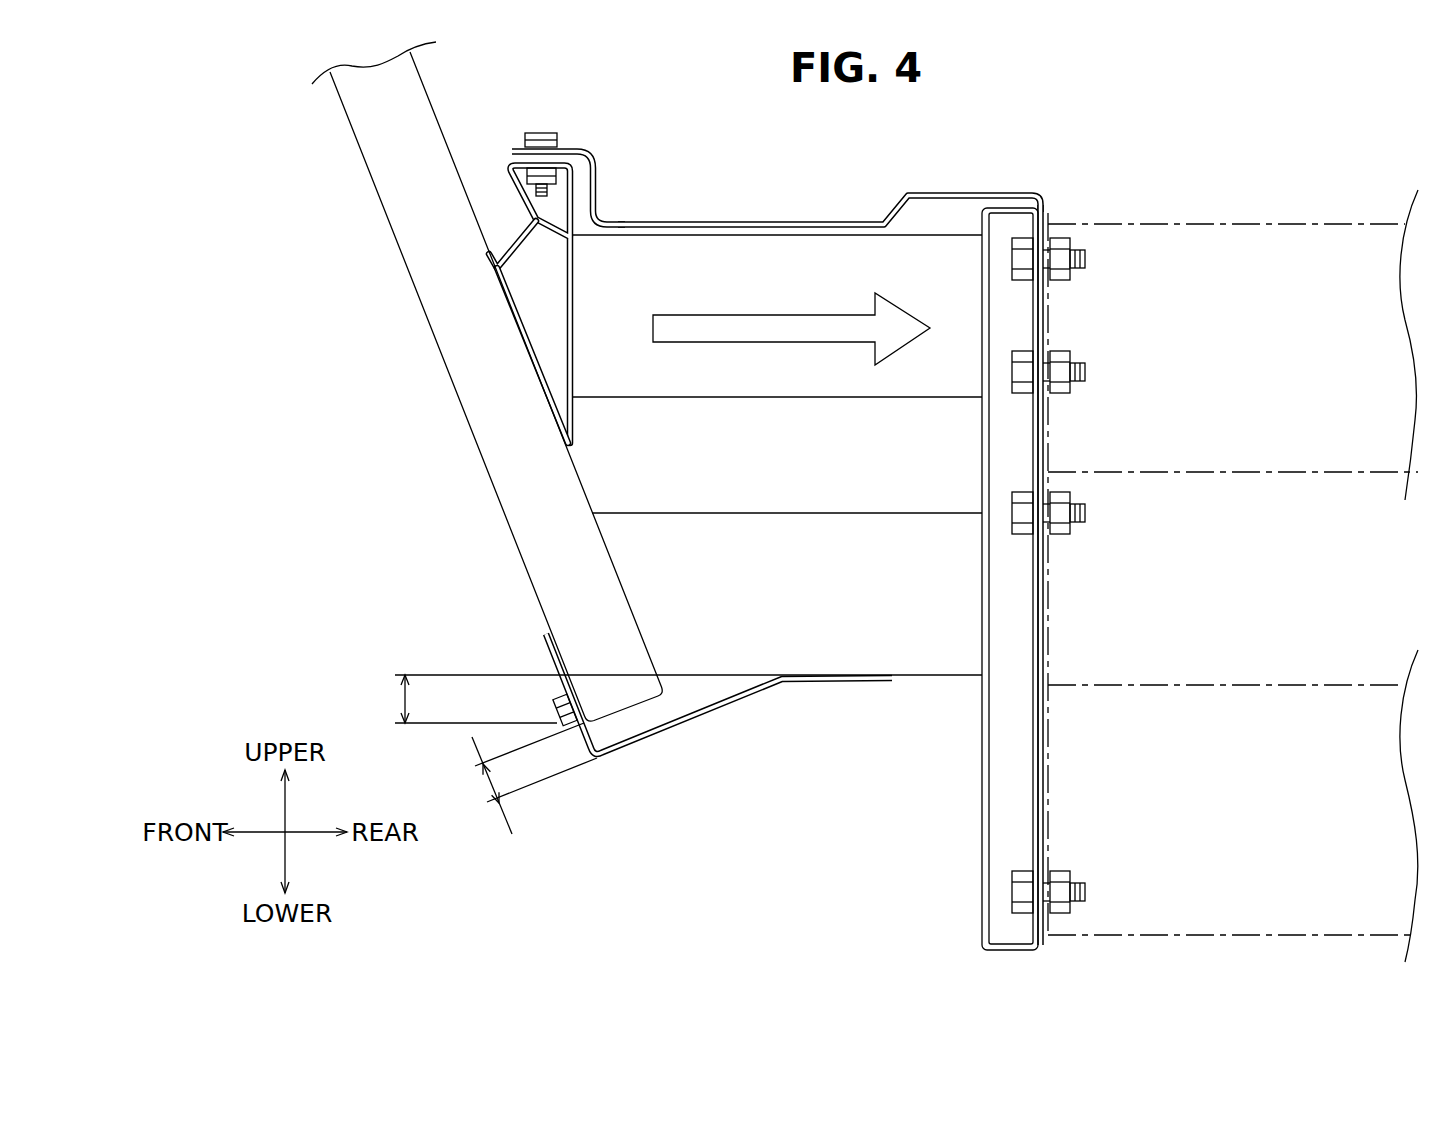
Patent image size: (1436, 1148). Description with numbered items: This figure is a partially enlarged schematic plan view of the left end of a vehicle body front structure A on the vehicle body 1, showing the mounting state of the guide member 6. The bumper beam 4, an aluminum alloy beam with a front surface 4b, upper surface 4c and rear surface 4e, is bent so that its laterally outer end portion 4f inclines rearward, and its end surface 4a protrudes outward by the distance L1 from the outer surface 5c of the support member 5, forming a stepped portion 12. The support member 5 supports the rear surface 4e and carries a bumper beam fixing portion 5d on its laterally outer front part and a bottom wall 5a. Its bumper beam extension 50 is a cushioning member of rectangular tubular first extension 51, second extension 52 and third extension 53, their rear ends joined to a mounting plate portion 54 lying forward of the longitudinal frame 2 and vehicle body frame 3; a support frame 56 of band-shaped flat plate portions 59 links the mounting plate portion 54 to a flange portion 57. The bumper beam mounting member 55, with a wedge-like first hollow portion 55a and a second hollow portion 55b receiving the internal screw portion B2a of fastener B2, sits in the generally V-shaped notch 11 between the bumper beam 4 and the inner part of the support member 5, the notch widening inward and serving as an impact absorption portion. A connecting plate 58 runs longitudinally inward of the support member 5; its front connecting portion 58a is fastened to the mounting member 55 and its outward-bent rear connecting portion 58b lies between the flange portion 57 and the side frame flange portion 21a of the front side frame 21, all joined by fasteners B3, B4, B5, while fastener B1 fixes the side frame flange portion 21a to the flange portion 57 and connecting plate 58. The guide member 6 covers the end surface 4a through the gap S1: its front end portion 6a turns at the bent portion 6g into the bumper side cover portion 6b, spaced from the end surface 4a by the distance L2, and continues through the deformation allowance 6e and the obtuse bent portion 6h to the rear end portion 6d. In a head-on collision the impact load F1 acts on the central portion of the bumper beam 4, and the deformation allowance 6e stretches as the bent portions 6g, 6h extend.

The vehicle body 1 is at (801, 196).
The longitudinal frame 2 is at (1258, 214).
The front side frame 21 is at (1258, 214).
The side frame flange portion 21a is at (1052, 216).
The vehicle body frame 3 is at (1256, 671).
The bumper beam 4 is at (426, 352).
The end surface 4a is at (602, 692).
The front surface 4b is at (397, 240).
The upper surface 4c is at (380, 172).
The rear surface 4e is at (437, 134).
The laterally outer end portion 4f is at (627, 710).
The support member 5 is at (717, 207).
The bumper beam extension 50 is at (717, 207).
The duct lower wall 5a is at (912, 650).
The outer surface 5c is at (930, 680).
The bumper beam fixing portion 5d is at (625, 580).
The first extension 51 is at (947, 257).
The second extension 52 is at (945, 608).
The third extension 53 is at (945, 447).
The mounting plate portion 54 is at (980, 828).
The bumper beam mounting member 55 is at (547, 203).
The first hollow portion 55a is at (547, 333).
The second hollow portion 55b is at (582, 152).
The support frame 56 is at (1053, 661).
The flange portion 57 is at (1040, 808).
The connecting plate 58 is at (925, 193).
The front connecting portion 58a is at (575, 148).
The rear connecting portion 58b is at (1047, 218).
The flat plate portions 59 is at (1017, 753).
The guide member 6 is at (753, 708).
The front end portion 6a is at (545, 643).
The bumper side cover portion 6b is at (665, 733).
The rear end portion 6d is at (845, 682).
The deformation allowance 6e is at (660, 712).
The bent portion 6g is at (597, 758).
The bent portion 6h is at (790, 682).
The notch 11 is at (538, 290).
The stepped portion 12 is at (690, 673).
The vehicle body front structure A is at (946, 134).
The fastener B1 is at (556, 710).
The fastener B2 is at (545, 133).
The internal screw portion B2a is at (525, 173).
The fastener B3 is at (1085, 260).
The fastener B4 is at (1085, 515).
The fastener B5 is at (1082, 893).
The impact load F1 is at (733, 343).
The gap S1 is at (692, 715).
The distance L1 is at (460, 699).
The distance L2 is at (526, 778).